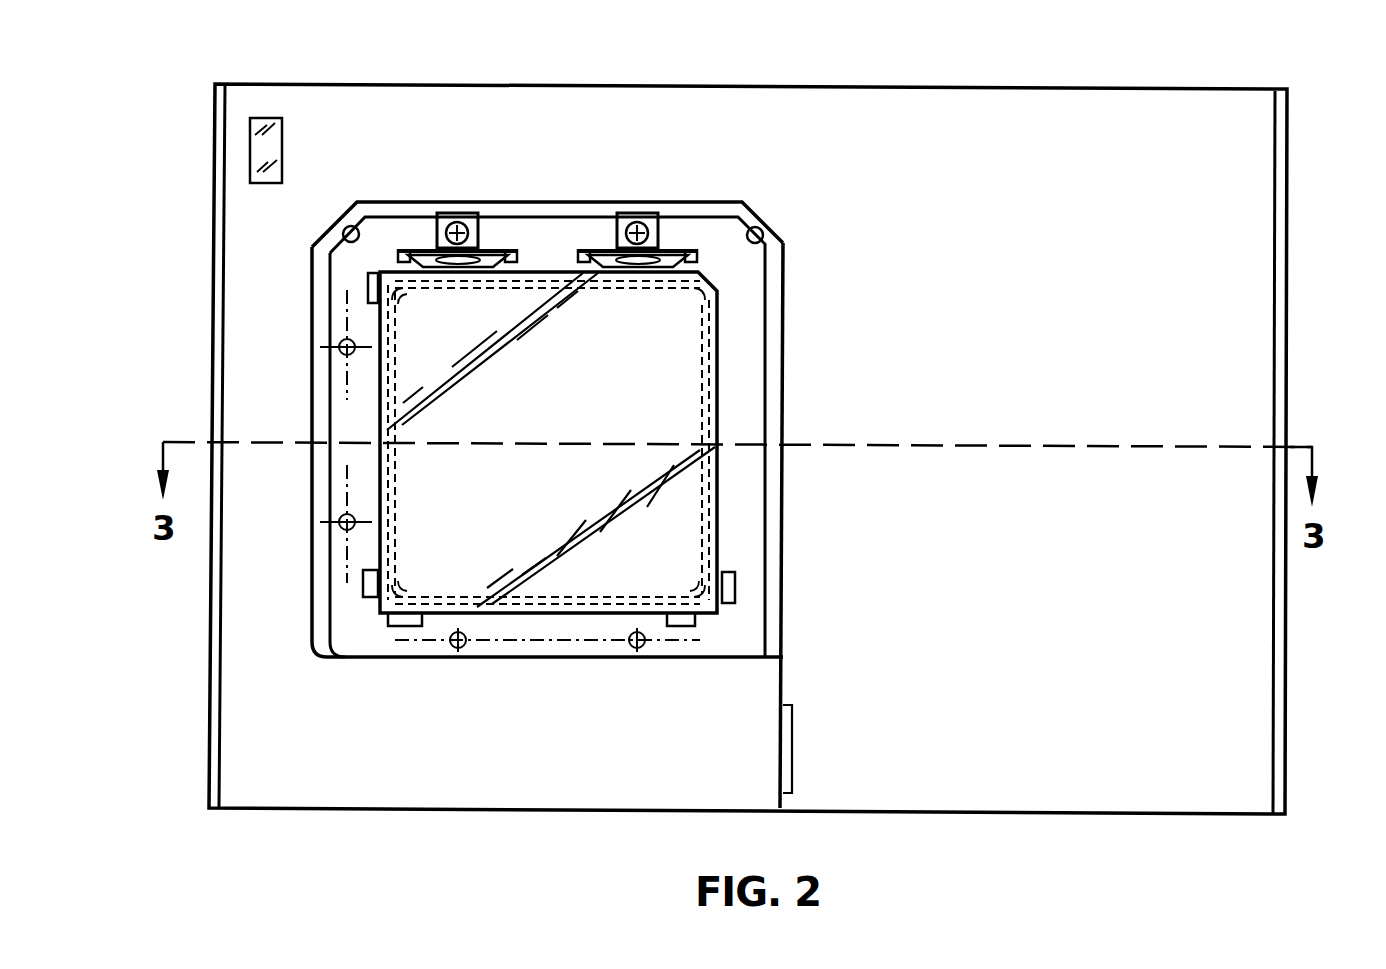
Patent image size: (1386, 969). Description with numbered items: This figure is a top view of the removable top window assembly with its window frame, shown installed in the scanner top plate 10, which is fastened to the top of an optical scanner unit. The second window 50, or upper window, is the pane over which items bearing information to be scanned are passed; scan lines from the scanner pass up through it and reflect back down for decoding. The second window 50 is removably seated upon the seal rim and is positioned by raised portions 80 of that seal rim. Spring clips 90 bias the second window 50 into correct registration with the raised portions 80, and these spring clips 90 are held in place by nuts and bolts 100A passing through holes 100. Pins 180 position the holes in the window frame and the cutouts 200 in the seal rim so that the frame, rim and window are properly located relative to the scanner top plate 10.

The scanner top plate 10 is at (972, 84).
The second window 50 is at (565, 616).
The raised portions 80 is at (372, 307).
The spring clips 90 is at (495, 273).
The holes 100 is at (468, 213).
The nuts and bolts 100A is at (447, 213).
The pins 180 is at (343, 226).
The cutouts 200 is at (338, 256).